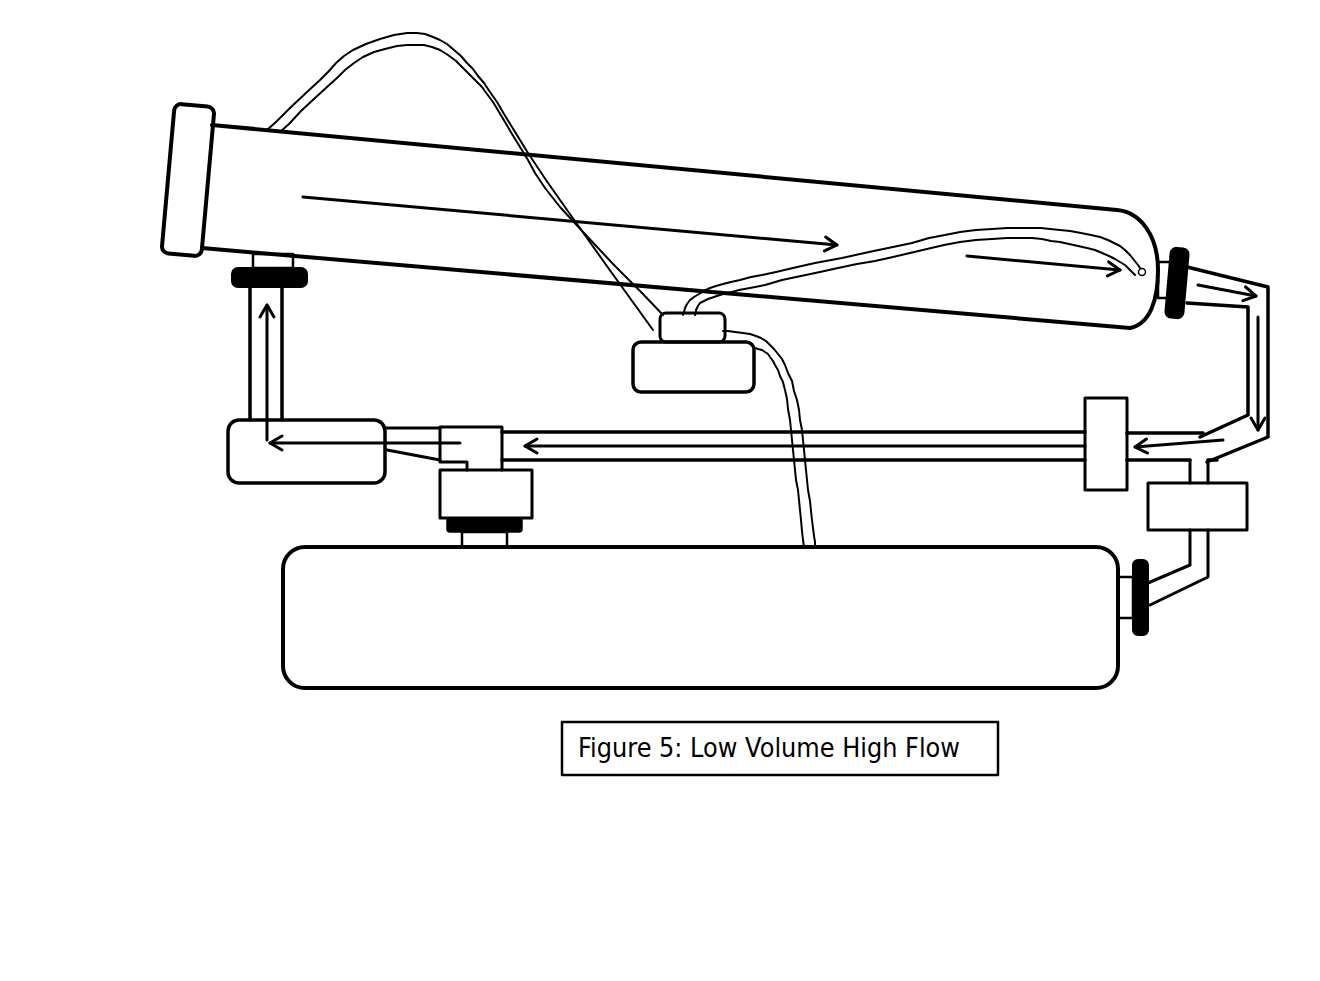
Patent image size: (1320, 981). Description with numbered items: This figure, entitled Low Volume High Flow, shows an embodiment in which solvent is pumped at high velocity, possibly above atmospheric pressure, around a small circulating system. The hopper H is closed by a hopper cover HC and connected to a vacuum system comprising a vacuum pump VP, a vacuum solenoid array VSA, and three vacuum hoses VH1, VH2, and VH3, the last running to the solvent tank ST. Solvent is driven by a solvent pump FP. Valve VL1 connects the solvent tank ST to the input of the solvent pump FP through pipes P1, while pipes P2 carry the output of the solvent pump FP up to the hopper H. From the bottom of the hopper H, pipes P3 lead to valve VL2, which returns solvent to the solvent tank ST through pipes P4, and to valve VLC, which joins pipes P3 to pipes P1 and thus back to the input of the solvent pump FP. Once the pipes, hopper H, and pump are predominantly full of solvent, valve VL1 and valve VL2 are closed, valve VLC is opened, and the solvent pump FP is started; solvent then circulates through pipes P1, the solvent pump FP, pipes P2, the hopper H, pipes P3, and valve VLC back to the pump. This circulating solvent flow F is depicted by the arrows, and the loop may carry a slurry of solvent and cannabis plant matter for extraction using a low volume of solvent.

The hopper H is at (708, 172).
The hopper cover HC is at (180, 102).
The vacuum hose 1 VH1 is at (490, 92).
The vacuum hose 2 VH2 is at (907, 250).
The vacuum hose 3 VH3 is at (783, 358).
The vacuum solenoid array VSA is at (665, 332).
The vacuum pump VP is at (693, 367).
The pipes P1 is at (443, 428).
The pipes P2 is at (248, 372).
The pipes P3 is at (1212, 473).
The pipes P4 is at (1172, 595).
The solvent pump FP is at (252, 460).
The valve VL1 is at (486, 508).
The valve VL2 is at (1197, 506).
The valve VLC is at (1106, 444).
The solvent tank ST is at (700, 617).
The solvent flow F is at (475, 210).